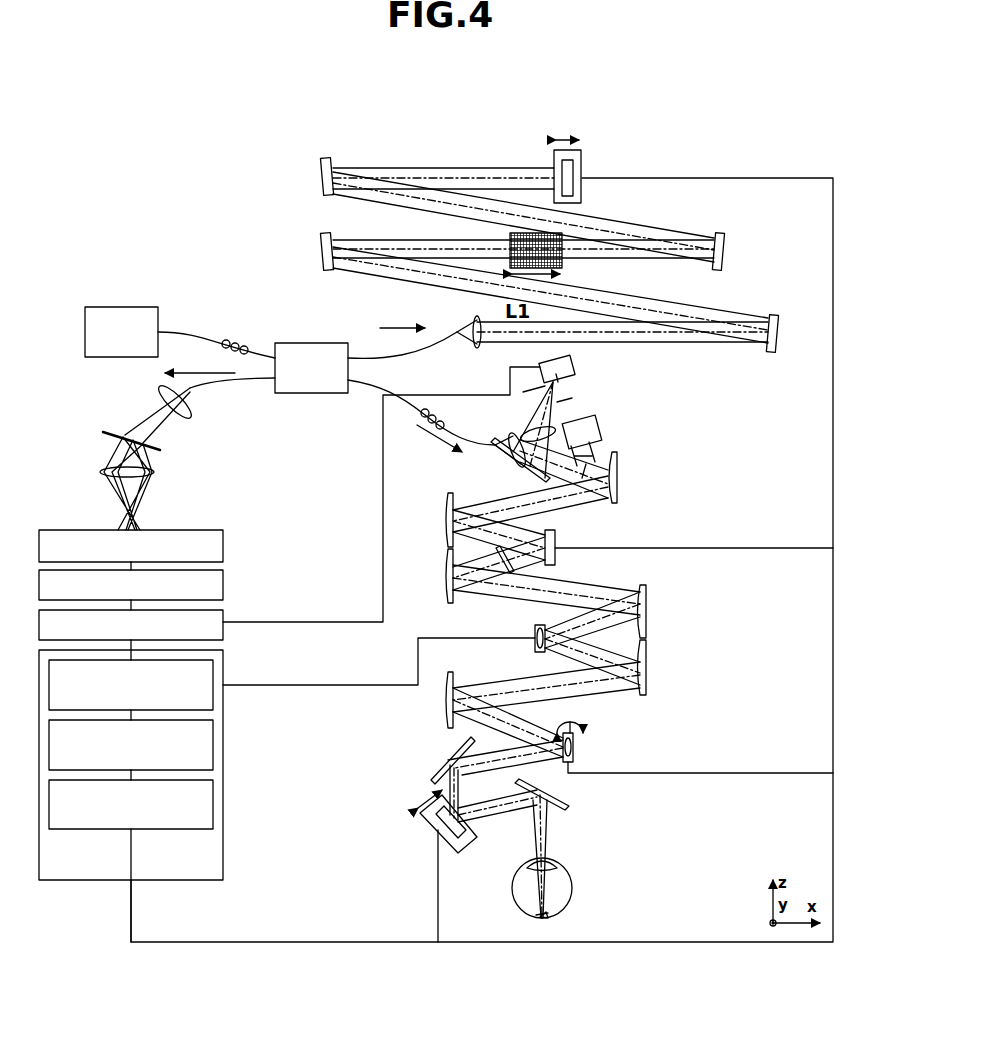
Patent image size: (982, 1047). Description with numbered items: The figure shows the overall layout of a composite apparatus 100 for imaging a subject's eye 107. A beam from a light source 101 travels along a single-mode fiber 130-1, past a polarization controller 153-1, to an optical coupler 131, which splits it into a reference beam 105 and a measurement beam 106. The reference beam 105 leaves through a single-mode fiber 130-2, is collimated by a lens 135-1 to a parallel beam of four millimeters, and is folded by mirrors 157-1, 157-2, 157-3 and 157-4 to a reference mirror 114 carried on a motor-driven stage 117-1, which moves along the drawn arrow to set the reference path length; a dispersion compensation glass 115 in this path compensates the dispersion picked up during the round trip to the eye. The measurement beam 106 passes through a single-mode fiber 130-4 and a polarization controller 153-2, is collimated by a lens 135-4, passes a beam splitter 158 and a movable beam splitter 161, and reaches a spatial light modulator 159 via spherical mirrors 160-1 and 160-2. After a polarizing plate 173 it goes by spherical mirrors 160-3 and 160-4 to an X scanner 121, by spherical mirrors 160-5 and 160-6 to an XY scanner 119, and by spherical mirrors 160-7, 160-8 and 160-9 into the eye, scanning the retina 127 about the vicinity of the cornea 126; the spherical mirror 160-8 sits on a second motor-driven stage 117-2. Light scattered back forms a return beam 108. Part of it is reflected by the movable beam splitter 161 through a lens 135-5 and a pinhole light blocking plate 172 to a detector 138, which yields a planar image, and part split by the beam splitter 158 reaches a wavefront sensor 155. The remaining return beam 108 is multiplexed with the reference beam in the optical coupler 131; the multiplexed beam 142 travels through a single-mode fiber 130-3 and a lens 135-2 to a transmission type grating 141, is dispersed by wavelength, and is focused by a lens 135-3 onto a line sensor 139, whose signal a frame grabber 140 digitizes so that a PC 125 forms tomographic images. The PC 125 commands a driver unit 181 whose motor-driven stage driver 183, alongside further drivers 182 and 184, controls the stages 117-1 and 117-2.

The composite apparatus 100 is at (181, 107).
The light source 101 is at (122, 307).
The reference beam 105 is at (398, 315).
The measurement beam 106 is at (427, 443).
The subject's eye 107 is at (572, 888).
The return beam 108 is at (552, 911).
The mirror 114 is at (573, 190).
The dispersion compensation glass 115 is at (562, 272).
The motor-driven stage 117-1 is at (582, 160).
The motor-driven stage 117-2 is at (425, 828).
The XY scanner 119 is at (587, 742).
The X scanner 121 is at (519, 632).
The PC 125 is at (223, 634).
The cornea 126 is at (556, 862).
The retina 127 is at (550, 920).
The optical fiber 130-1 is at (192, 334).
The single-mode fiber 130-2 is at (430, 362).
The single-mode fiber 130-3 is at (238, 384).
The single-mode fiber 130-4 is at (355, 392).
The optical coupler 131 is at (314, 343).
The lens 135-1 is at (474, 318).
The lens 135-2 is at (185, 419).
The lens 135-3 is at (155, 472).
The lens 135-4 is at (508, 456).
The lens 135-5 is at (539, 428).
The detector 138 is at (572, 362).
The line sensor 139 is at (223, 546).
The frame grabber 140 is at (223, 586).
The transmission type grating 141 is at (108, 436).
The multiplexed beam 142 is at (200, 360).
The polarization controller 153-1 is at (247, 333).
The polarization controller 153-2 is at (462, 413).
The wavefront sensor 155 is at (600, 428).
The mirror 157-1 is at (791, 347).
The mirror 157-2 is at (293, 252).
The mirror 157-3 is at (750, 252).
The mirror 157-4 is at (293, 177).
The beam splitter 158 is at (556, 422).
The spatial light modulator 159 is at (572, 544).
The spherical mirror 160-1 is at (644, 477).
The spherical mirror 160-2 is at (419, 520).
The spherical mirror 160-3 is at (419, 576).
The spherical mirror 160-4 is at (673, 611).
The spherical mirror 160-5 is at (673, 667).
The spherical mirror 160-6 is at (416, 700).
The spherical mirror 160-7 is at (427, 760).
The spherical mirror 160-8 is at (464, 850).
The spherical mirror 160-9 is at (566, 793).
The movable beam splitter 161 is at (524, 480).
The light blocking plate 172 is at (560, 396).
The polarizing plate 173 is at (514, 572).
The driver unit 181 is at (223, 848).
The optical scanner driver 182 is at (213, 670).
The motor-driven stage driver 183 is at (213, 743).
The spatial light modulator driver 184 is at (213, 803).